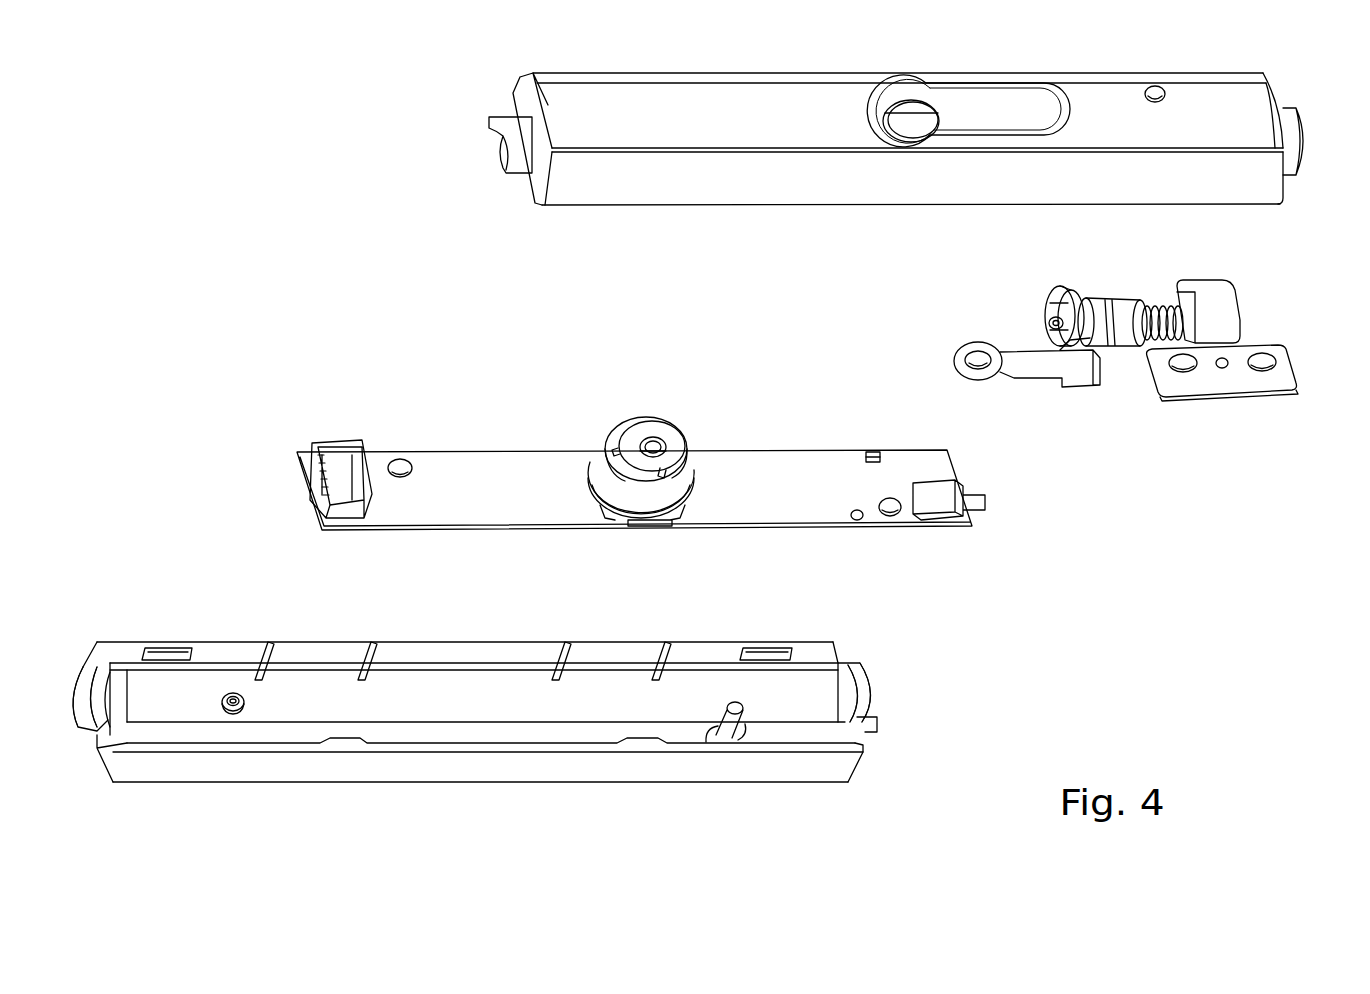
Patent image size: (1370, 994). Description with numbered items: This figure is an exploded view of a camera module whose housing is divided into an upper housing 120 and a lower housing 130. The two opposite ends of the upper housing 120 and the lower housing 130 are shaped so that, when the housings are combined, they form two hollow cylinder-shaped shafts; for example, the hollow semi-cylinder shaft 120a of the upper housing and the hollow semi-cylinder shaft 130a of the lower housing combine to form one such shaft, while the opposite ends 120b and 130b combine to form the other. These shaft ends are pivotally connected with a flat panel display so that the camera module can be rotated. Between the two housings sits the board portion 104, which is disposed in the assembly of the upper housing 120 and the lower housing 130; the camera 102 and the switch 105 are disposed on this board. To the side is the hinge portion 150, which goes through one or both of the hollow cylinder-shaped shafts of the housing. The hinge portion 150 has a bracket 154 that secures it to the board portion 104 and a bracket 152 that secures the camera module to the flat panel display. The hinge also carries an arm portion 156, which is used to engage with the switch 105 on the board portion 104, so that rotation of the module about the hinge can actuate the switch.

The upper housing 120 is at (640, 112).
The hollow semi-cylinder shaft 120a is at (510, 113).
The hollow semi-cylinder shaft 120b is at (1298, 118).
The camera 102 is at (632, 432).
The board portion 104 is at (475, 478).
The switch 105 is at (937, 498).
The hinge portion 150 is at (1126, 348).
The bracket 152 is at (1212, 380).
The bracket 154 is at (1077, 388).
The arm portion 156 is at (1060, 297).
The lower housing 130 is at (450, 767).
The hollow semi-cylinder shaft 130a is at (85, 667).
The hollow semi-cylinder shaft 130b is at (847, 677).